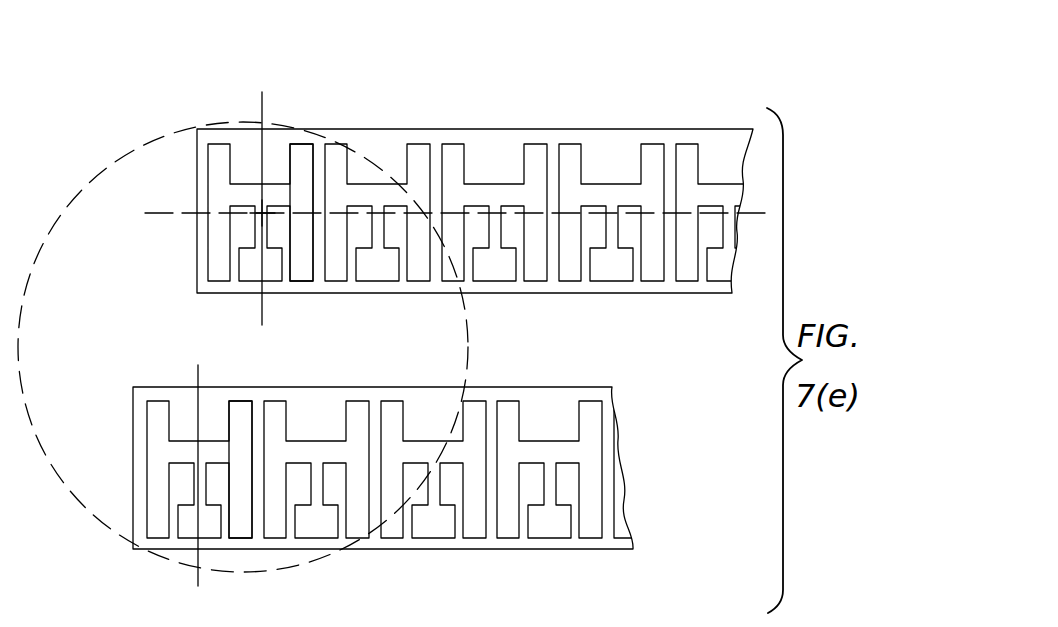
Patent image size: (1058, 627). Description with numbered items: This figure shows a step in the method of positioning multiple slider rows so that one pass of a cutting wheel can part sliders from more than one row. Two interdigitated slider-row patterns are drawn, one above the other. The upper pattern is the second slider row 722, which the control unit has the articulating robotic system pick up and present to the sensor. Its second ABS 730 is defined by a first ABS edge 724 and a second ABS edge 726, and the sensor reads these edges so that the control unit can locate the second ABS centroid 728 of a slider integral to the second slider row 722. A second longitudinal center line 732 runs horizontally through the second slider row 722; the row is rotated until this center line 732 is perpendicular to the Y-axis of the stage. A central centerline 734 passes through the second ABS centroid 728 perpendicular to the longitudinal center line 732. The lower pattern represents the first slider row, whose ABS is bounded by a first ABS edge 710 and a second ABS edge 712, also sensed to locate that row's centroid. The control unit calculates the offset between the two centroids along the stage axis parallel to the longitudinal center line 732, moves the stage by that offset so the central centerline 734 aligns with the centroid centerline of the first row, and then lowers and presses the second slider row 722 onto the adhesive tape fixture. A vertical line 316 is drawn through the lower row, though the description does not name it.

The second slider row 722 is at (716, 74).
The second ABS 730 is at (495, 145).
The first ABS edge 724 is at (207, 227).
The second ABS edge 726 is at (314, 242).
The second longitudinal center line 732 is at (168, 214).
The central centerline 734 is at (264, 118).
The second ABS centroid 728 is at (262, 215).
The first ABS edge 710 is at (145, 440).
The second ABS edge 712 is at (248, 443).
The vertical reference line 316 is at (198, 572).